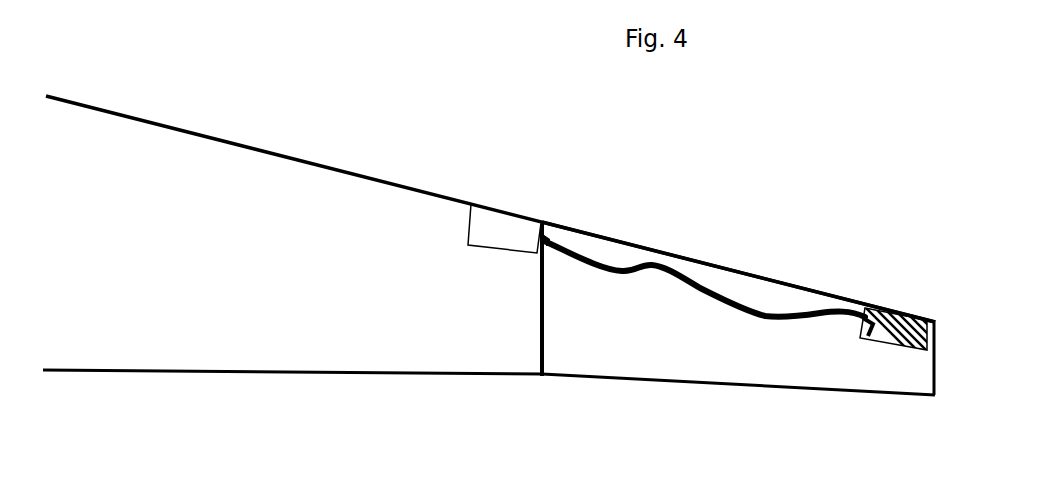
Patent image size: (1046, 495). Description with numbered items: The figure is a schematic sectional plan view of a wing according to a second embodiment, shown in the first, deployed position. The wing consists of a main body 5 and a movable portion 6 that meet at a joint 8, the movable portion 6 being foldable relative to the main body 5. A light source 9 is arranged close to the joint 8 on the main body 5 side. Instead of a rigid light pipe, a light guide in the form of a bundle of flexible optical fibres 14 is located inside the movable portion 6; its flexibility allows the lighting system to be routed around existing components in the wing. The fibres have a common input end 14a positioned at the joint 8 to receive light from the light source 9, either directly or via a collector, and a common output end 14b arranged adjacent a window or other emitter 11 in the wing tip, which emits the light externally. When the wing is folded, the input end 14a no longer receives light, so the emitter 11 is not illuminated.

The main body 5 is at (178, 129).
The movable portion 6 is at (748, 274).
The joint 8 is at (583, 415).
The light source 9 is at (489, 213).
The light emitter 11 is at (906, 308).
The bundle of flexible optical fibres 14 is at (655, 266).
The common input end 14a is at (572, 338).
The common output end 14b is at (865, 340).